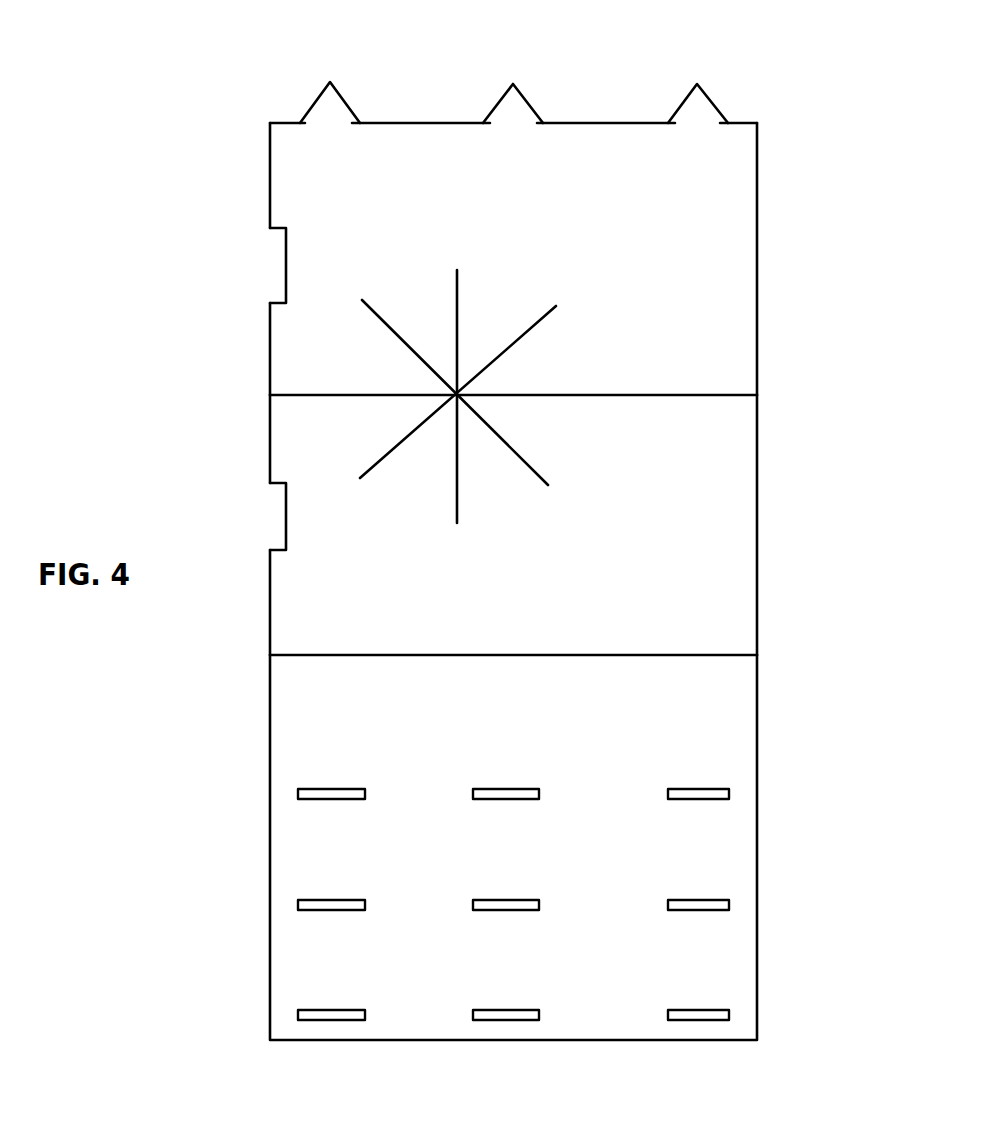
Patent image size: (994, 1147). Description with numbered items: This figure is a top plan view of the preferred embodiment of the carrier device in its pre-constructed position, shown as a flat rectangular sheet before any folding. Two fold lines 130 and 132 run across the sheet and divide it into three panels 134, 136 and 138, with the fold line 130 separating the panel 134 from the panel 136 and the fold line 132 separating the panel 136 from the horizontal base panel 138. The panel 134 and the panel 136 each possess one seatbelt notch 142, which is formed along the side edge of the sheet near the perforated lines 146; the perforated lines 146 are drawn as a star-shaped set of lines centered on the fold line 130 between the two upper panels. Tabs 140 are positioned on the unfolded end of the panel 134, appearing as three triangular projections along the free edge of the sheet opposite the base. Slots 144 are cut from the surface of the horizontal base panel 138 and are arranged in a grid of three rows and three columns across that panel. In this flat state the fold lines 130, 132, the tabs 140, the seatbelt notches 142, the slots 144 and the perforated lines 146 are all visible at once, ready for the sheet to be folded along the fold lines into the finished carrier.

The fold line 130 is at (702, 394).
The fold line 132 is at (699, 651).
The panel 134 is at (732, 202).
The panel 136 is at (728, 497).
The horizontal base panel 138 is at (728, 740).
The tabs 140 is at (369, 99).
The seatbelt notch 142 is at (266, 268).
The slots 144 is at (698, 1001).
The perforated lines 146 is at (370, 291).